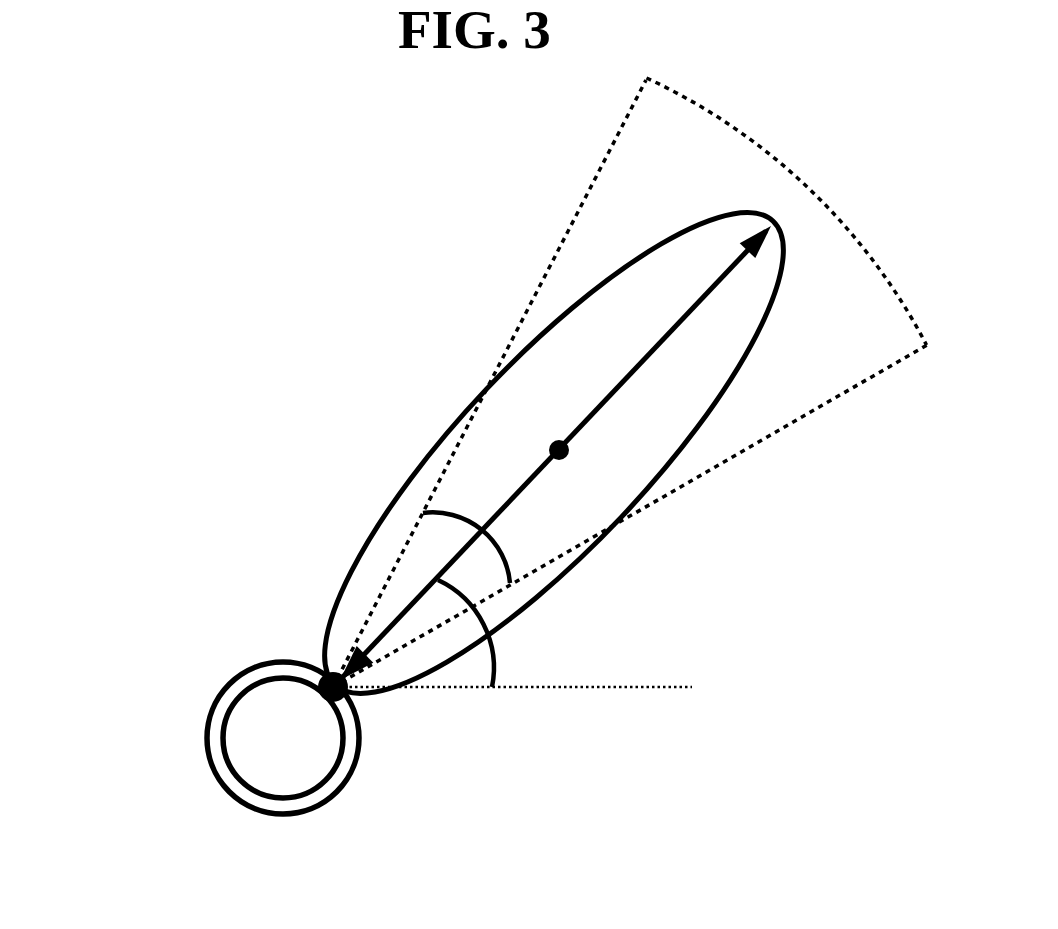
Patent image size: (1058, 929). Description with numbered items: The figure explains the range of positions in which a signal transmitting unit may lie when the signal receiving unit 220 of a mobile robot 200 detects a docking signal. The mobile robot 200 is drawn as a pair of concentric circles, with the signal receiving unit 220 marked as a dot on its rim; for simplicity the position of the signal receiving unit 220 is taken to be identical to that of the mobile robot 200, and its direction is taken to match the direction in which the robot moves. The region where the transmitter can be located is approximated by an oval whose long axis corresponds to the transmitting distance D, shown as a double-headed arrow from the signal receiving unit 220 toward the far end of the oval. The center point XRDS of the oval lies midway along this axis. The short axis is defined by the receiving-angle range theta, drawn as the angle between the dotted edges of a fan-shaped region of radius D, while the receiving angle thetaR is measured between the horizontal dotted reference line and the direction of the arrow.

The mobile robot 200 is at (255, 718).
The signal receiving unit 220 is at (330, 665).
The transmitting distance D is at (554, 454).
The center point of the oval XRDS is at (637, 444).
The range of receiving angles theta is at (447, 510).
The receiving angle of the signal receiving unit thetaR is at (492, 655).